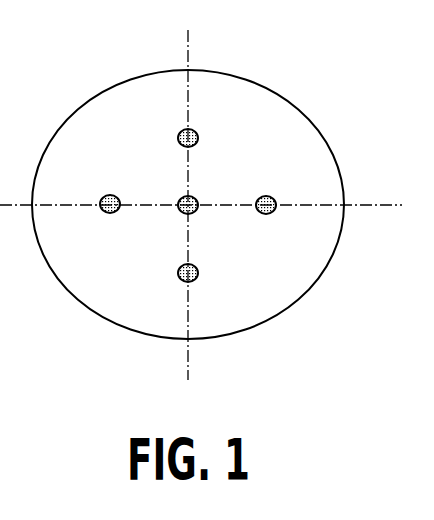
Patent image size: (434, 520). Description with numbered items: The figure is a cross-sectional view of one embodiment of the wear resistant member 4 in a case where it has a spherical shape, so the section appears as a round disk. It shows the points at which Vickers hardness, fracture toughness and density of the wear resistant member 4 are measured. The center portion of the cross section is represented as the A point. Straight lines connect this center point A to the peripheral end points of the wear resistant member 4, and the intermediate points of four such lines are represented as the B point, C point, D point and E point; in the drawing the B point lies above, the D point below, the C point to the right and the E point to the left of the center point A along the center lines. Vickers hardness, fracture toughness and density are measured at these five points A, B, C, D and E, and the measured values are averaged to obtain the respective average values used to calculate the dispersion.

The wear resistant member 4 is at (95, 95).
The A point A is at (180, 212).
The B point B is at (177, 139).
The C point C is at (258, 212).
The D point D is at (177, 273).
The E point E is at (102, 212).